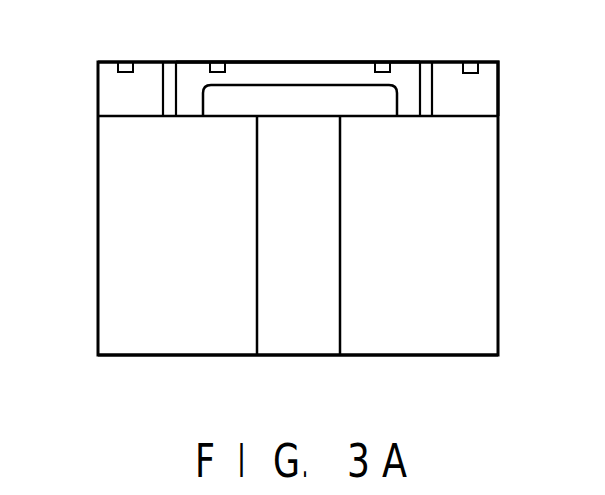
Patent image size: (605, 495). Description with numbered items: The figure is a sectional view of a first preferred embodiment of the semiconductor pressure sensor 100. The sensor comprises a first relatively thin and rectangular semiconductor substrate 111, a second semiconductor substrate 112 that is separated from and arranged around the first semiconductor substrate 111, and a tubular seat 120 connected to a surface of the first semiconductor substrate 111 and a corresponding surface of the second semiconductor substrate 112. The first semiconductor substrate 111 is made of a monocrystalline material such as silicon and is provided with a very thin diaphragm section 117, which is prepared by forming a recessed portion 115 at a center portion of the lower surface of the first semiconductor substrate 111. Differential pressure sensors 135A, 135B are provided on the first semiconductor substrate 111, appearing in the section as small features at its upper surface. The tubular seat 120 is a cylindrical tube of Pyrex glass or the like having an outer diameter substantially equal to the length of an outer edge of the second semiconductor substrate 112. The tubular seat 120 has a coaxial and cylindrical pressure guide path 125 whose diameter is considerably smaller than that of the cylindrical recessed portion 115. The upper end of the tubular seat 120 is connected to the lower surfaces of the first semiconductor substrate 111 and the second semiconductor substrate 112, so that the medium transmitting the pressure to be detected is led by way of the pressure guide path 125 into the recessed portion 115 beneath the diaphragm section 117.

The semiconductor pressure sensor 100 is at (98, 298).
The first semiconductor substrate 111 is at (410, 67).
The second semiconductor substrate 112 is at (556, 109).
The recessed portion 115 is at (340, 93).
The diaphragm section 117 is at (290, 62).
The tubular seat 120 is at (552, 233).
The pressure guide path 125 is at (318, 340).
The differential pressure sensor 135A is at (216, 61).
The differential pressure sensor 135B is at (381, 61).